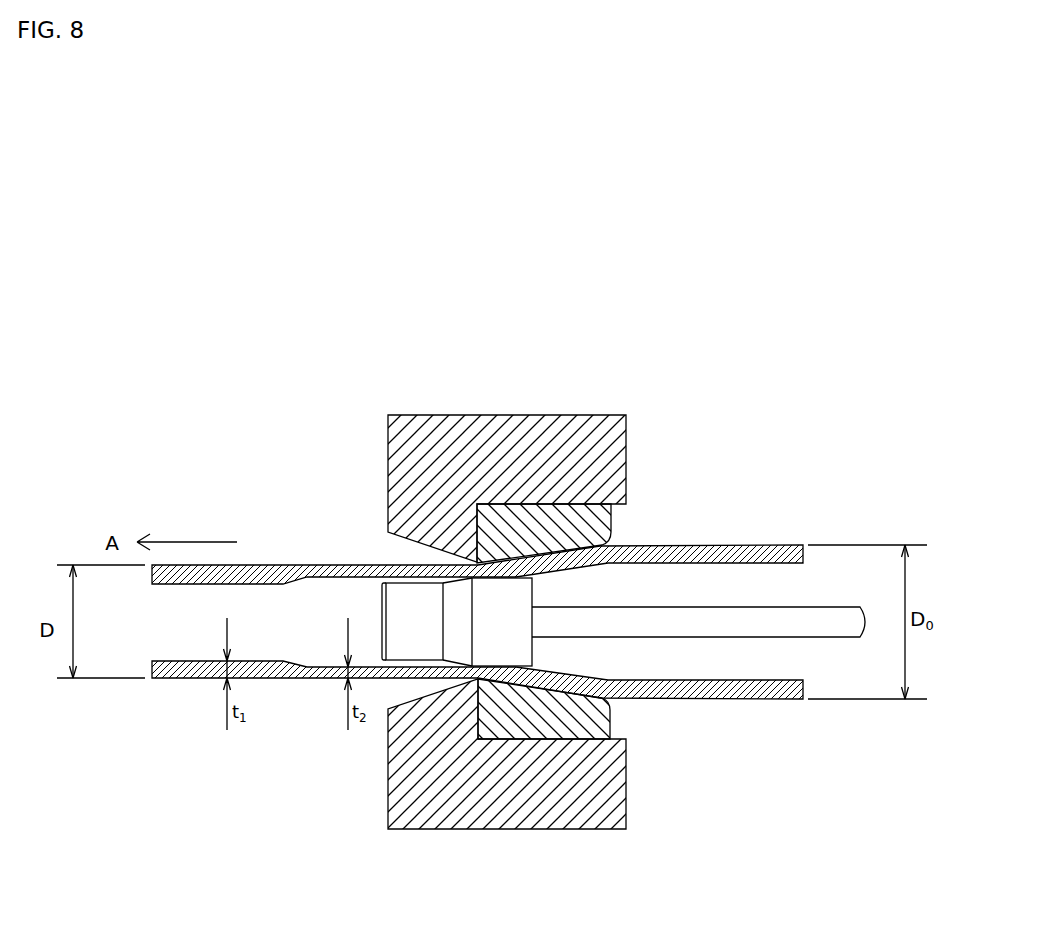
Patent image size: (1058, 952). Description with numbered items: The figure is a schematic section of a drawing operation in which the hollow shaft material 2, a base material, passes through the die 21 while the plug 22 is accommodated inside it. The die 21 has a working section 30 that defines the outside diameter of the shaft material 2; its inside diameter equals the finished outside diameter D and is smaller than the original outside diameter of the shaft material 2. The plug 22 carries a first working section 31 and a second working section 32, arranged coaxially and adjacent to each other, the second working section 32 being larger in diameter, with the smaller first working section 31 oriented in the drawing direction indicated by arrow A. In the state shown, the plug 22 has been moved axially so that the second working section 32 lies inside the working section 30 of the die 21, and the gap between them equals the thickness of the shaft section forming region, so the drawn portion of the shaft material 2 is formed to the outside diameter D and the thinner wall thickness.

The shaft material 2 is at (783, 702).
The die 21 is at (610, 835).
The plug 22 is at (378, 598).
The working section 30 is at (553, 678).
The first working section 31 is at (413, 597).
The second working section 32 is at (503, 595).